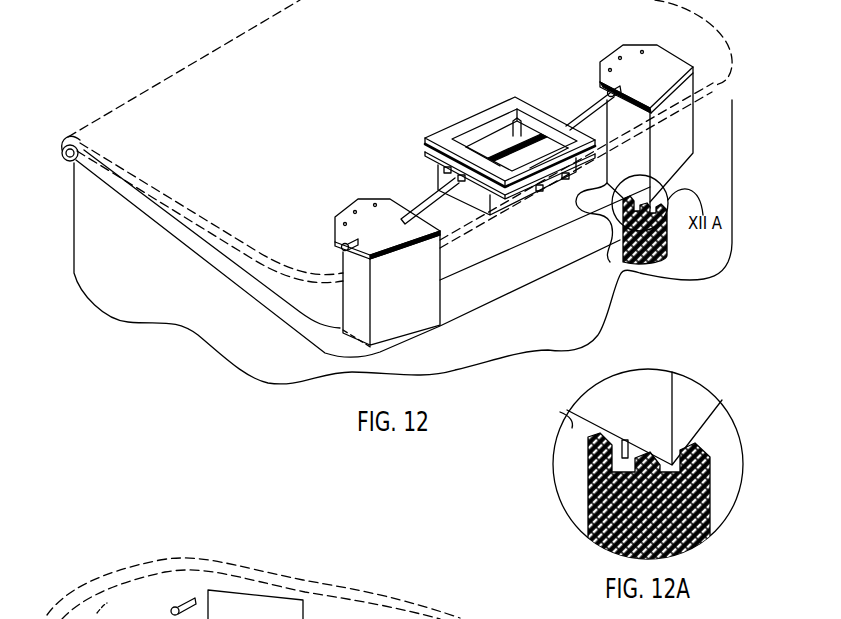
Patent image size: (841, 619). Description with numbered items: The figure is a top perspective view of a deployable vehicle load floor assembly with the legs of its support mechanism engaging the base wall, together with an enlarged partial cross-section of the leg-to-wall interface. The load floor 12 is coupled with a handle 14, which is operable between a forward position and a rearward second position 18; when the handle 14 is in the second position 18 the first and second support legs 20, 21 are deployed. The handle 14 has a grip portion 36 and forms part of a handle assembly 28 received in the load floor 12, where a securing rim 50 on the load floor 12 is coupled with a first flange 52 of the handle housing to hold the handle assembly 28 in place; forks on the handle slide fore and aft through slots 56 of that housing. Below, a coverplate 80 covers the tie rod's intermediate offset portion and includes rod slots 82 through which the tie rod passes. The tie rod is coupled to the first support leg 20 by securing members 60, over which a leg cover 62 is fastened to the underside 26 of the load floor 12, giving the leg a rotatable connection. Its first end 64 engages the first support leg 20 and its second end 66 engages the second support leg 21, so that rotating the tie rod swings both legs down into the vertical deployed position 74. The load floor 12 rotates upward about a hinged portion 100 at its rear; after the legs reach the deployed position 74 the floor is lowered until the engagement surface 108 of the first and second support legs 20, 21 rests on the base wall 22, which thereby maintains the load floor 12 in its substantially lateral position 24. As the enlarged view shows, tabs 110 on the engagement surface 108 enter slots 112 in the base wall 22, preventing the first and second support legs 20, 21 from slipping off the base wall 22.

In FIG. 12, the load floor 12 is at (180, 560).
In FIG. 12, the handle 14 is at (530, 134).
In FIG. 12, the second position 18 is at (352, 116).
In FIG. 12, the first support leg 20 is at (430, 297).
In FIG. 12, the second support leg 21 is at (680, 126).
In FIG. 12A, the second support leg 21 is at (687, 400).
In FIG. 12, the base wall 22 is at (565, 327).
In FIG. 12A, the base wall 22 is at (720, 485).
In FIG. 12, the substantially lateral position 24 is at (324, 545).
In FIG. 12, the underside 26 is at (97, 617).
In FIG. 12, the handle assembly 28 is at (517, 120).
In FIG. 12, the grip portion 36 is at (503, 150).
In FIG. 12, the securing rim 50 is at (433, 133).
In FIG. 12, the first flange 52 is at (433, 160).
In FIG. 12, the slots 56 is at (360, 617).
In FIG. 12, the securing members 60 is at (344, 250).
In FIG. 12, the leg cover 62 is at (345, 213).
In FIG. 12, the first end 64 is at (417, 203).
In FIG. 12, the second end 66 is at (593, 98).
In FIG. 12, the deployed position 74 is at (326, 336).
In FIG. 12, the coverplate 80 is at (480, 207).
In FIG. 12, the rod slots 82 is at (453, 177).
In FIG. 12, the hinged portion 100 is at (64, 164).
In FIG. 12, the engagement surface 108 is at (605, 188).
In FIG. 12A, the engagement surface 108 is at (568, 424).
In FIG. 12, the tabs 110 is at (630, 207).
In FIG. 12A, the tabs 110 is at (630, 455).
In FIG. 12, the slots 112 is at (637, 263).
In FIG. 12A, the slots 112 is at (633, 473).